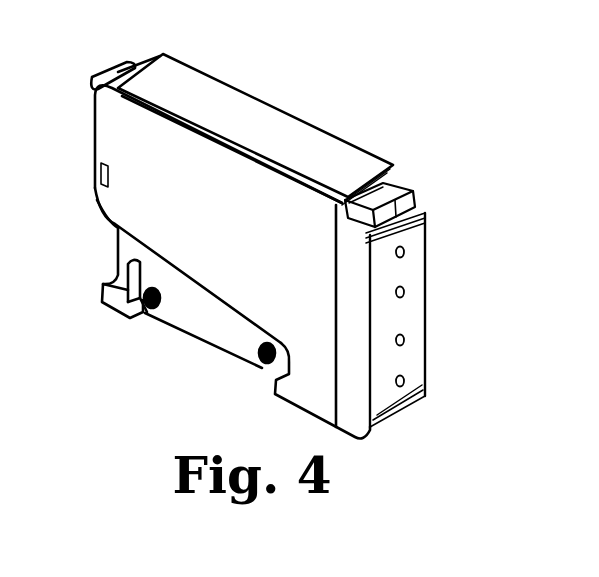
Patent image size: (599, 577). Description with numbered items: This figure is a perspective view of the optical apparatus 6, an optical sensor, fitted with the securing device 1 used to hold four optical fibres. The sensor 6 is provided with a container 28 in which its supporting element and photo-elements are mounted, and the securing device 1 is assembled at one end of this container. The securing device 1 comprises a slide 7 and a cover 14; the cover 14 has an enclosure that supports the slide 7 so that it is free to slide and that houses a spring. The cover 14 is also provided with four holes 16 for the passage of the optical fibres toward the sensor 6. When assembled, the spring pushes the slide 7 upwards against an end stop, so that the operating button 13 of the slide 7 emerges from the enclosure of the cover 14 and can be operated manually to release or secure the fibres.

The securing device 1 is at (290, 250).
The optical apparatus 6 is at (249, 95).
The slide 7 is at (417, 185).
The operating button 13 is at (402, 174).
The cover 14 is at (427, 329).
The holes 16 is at (404, 254).
The container 28 is at (191, 220).